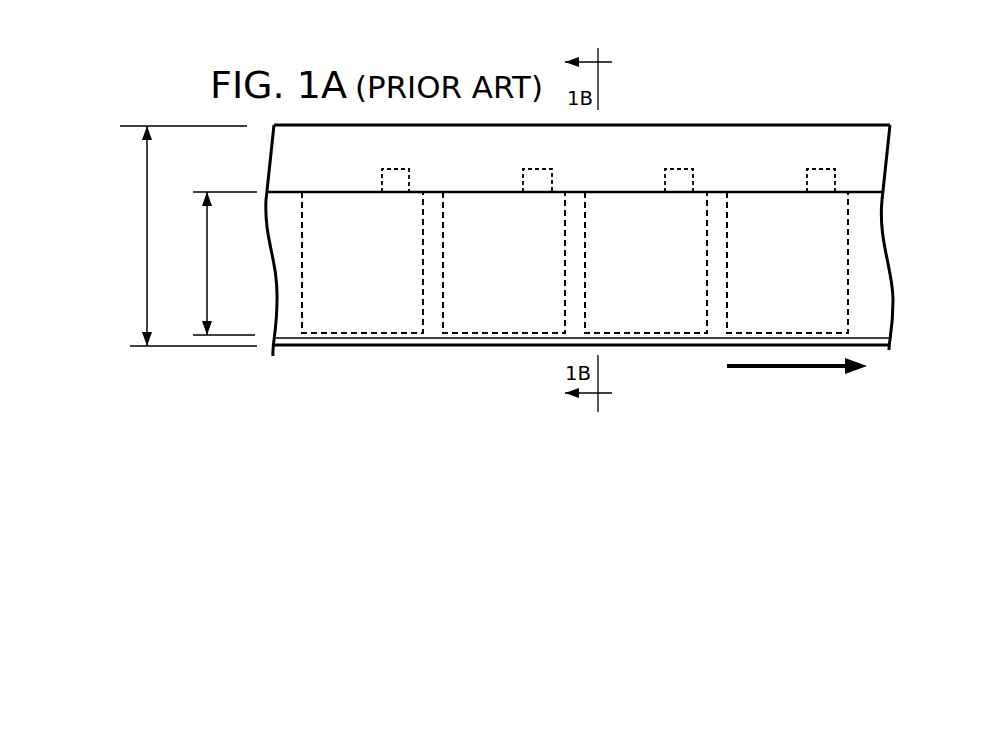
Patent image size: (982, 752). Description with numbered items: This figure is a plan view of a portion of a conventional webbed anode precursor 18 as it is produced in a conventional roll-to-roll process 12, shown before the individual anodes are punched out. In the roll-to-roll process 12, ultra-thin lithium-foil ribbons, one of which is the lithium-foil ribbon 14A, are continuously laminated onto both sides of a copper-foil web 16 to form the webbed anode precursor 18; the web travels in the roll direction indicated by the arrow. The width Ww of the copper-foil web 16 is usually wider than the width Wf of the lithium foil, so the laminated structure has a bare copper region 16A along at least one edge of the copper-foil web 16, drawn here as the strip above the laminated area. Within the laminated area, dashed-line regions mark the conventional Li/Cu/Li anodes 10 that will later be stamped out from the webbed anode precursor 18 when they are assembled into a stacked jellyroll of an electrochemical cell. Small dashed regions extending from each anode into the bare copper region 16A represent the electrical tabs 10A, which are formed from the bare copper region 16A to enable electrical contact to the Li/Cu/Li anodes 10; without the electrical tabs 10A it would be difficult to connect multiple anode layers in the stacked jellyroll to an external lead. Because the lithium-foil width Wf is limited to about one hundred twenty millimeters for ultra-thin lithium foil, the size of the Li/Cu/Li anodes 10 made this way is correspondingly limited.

The Li/Cu/Li anode 10 is at (363, 272).
The electrical tab 10A is at (396, 178).
The roll-to-roll process 12 is at (622, 279).
The lithium-foil ribbon 14A is at (867, 280).
The copper-foil web 16 is at (824, 120).
The bare copper region 16A is at (625, 152).
The webbed anode precursor 18 is at (432, 392).
The width of the copper-foil web Ww is at (147, 183).
The width of the lithium foil Wf is at (207, 229).